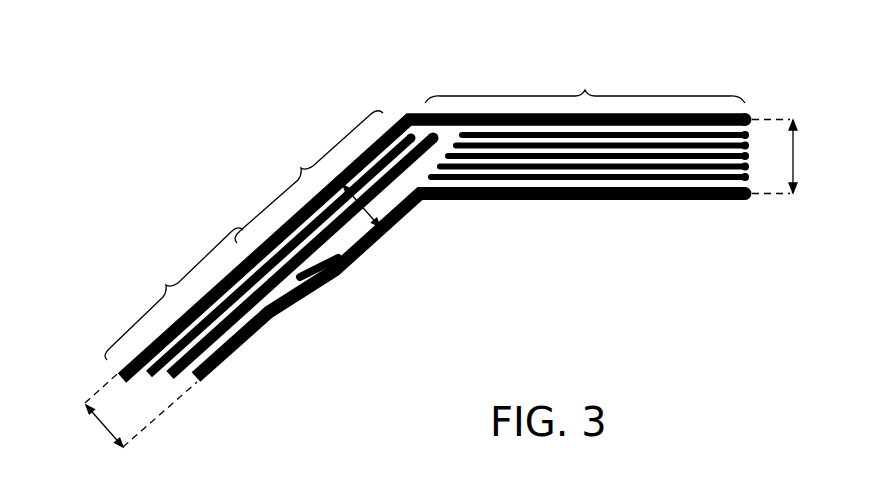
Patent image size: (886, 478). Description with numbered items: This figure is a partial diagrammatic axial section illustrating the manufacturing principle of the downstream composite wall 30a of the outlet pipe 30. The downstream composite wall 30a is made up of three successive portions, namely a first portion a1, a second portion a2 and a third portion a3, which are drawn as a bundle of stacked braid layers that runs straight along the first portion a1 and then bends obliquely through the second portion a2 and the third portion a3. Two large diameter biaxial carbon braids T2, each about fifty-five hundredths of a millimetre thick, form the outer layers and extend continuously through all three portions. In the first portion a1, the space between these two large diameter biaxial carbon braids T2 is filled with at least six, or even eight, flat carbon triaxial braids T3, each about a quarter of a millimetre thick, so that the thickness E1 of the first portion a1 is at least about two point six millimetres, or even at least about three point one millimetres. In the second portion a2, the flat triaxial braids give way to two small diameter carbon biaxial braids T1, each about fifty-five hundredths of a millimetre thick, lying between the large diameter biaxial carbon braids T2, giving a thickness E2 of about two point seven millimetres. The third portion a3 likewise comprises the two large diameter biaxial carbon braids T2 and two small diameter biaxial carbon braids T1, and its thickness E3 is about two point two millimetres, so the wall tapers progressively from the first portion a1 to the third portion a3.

The outlet pipe 30 is at (437, 254).
The downstream composite wall 30a is at (399, 93).
The small diameter carbon biaxial braid T1 is at (247, 302).
The large diameter biaxial carbon braid T2 is at (398, 203).
The flat carbon triaxial braid T3 is at (597, 147).
The first portion a1 is at (585, 79).
The second portion a2 is at (309, 177).
The third portion a3 is at (174, 294).
The thickness of the first portion E1 is at (790, 157).
The thickness of the second portion E2 is at (361, 207).
The thickness of the third portion E3 is at (136, 412).